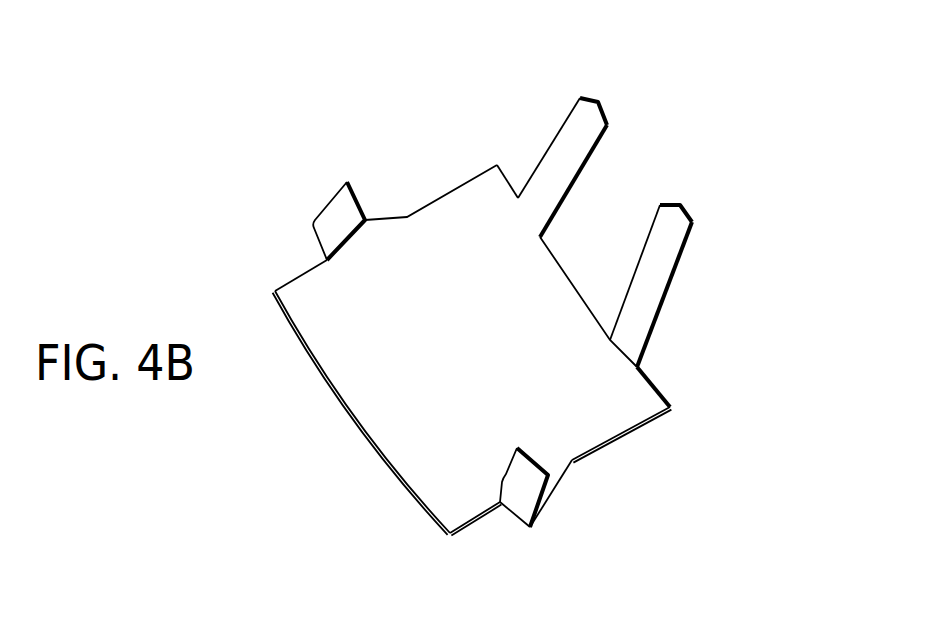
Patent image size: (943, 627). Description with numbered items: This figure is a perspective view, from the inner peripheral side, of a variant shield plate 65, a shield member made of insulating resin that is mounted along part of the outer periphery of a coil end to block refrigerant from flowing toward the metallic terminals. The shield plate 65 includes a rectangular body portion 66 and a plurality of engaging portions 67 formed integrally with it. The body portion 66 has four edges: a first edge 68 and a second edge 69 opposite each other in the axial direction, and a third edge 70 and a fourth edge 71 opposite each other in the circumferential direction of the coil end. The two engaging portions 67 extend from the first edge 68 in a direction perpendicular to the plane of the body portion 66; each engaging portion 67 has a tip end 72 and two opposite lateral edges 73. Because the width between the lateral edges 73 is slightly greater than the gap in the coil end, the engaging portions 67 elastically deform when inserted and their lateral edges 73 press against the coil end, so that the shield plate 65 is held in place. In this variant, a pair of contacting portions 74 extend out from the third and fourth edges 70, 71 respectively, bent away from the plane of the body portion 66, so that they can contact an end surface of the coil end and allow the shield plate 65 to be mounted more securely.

The shield plate 65 is at (670, 135).
The body portion 66 is at (492, 255).
The engaging portion 67 is at (570, 142).
The first edge 68 is at (567, 277).
The second edge 69 is at (353, 422).
The third edge 70 is at (312, 268).
The fourth edge 71 is at (620, 442).
The tip end 72 is at (598, 102).
The lateral edge 73 is at (537, 162).
The contacting portion 74 is at (337, 212).